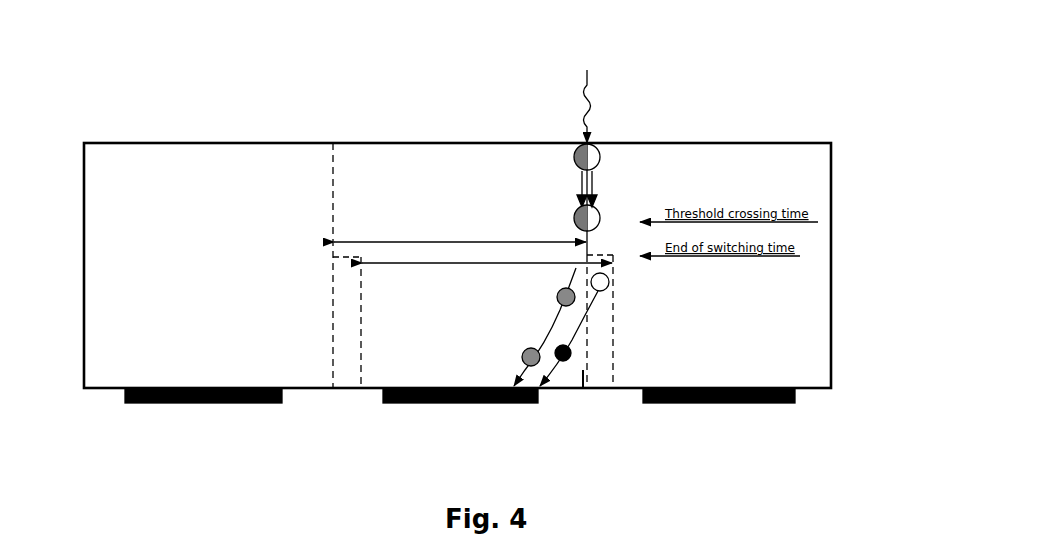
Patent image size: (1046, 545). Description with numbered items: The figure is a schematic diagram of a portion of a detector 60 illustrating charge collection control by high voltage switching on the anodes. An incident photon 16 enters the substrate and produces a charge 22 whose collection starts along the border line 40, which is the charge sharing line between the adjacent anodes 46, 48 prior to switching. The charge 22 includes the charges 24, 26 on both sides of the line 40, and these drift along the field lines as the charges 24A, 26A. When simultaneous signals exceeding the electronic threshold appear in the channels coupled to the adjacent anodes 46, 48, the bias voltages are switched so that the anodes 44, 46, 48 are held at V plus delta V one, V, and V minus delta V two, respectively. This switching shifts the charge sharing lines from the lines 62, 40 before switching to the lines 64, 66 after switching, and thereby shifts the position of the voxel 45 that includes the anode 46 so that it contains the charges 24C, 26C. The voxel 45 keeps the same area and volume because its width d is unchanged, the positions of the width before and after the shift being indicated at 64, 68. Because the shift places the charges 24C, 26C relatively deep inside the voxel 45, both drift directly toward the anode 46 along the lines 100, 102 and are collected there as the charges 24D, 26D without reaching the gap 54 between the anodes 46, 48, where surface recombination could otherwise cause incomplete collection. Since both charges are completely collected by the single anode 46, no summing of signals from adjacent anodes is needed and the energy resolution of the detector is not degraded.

The incident photon 16 is at (586, 74).
The charge 22 is at (535, 176).
The charge 24 is at (574, 158).
The charge 24A is at (574, 220).
The charge 24C is at (556, 298).
The charge 24D is at (522, 359).
The charge 26 is at (600, 157).
The charge 26A is at (601, 216).
The charge 26C is at (610, 286).
The charge 26D is at (572, 344).
The border line 40 is at (588, 388).
The anode 44 is at (149, 404).
The voxel 45 is at (402, 348).
The anode 46 is at (461, 404).
The anode 48 is at (766, 405).
The gap 54 is at (582, 390).
The detector 60 is at (198, 142).
The charge sharing line 62 is at (332, 221).
The charge sharing line 64 is at (332, 298).
The charge sharing line 66 is at (615, 275).
The width position 68 is at (420, 263).
The collection line 100 is at (558, 315).
The collection line 102 is at (594, 313).